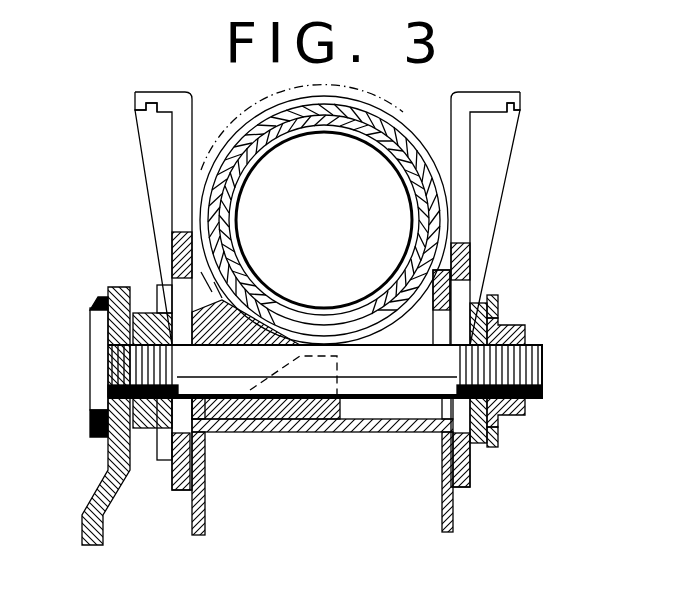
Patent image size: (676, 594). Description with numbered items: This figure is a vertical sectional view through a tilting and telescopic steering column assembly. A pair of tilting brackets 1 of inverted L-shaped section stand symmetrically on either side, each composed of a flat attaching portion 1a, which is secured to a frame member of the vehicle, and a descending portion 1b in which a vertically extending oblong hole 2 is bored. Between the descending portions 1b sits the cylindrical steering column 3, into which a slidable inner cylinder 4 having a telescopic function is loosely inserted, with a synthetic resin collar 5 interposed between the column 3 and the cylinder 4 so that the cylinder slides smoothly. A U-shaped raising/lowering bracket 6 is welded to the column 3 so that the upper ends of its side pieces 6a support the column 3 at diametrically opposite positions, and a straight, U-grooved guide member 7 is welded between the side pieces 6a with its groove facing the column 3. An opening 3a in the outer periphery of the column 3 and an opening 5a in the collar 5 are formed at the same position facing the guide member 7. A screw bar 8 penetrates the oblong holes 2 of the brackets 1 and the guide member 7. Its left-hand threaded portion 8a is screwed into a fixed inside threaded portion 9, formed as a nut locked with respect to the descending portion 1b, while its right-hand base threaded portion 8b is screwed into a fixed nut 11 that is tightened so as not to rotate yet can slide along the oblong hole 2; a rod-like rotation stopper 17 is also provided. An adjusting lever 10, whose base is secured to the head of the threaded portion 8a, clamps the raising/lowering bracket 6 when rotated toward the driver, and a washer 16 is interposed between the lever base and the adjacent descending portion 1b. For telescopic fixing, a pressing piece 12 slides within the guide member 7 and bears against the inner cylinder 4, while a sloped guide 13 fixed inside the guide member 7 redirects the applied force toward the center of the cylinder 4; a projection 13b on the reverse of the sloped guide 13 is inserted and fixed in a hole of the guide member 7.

The tilting bracket 1 is at (170, 165).
The flat attaching portion 1a is at (165, 112).
The descending portion 1b is at (170, 215).
The oblong hole 2 is at (458, 323).
The steering column 3 is at (358, 98).
The opening 3a is at (245, 278).
The slidable inner cylinder 4 is at (413, 213).
The collar 5 is at (338, 117).
The opening 5a is at (250, 292).
The raising/lowering bracket 6 is at (205, 496).
The side piece 6a is at (207, 447).
The guide member 7 is at (330, 432).
The screw bar 8 is at (541, 347).
The threaded portion 8a is at (542, 375).
The base threaded portion 8b is at (110, 368).
The fixed inside threaded portion 9 is at (522, 407).
The adjusting lever 10 is at (94, 502).
The fixed nut 11 is at (147, 312).
The pressing piece 12 is at (267, 303).
The sloped guide 13 is at (320, 352).
The projection 13b is at (237, 433).
The washer 16 is at (490, 440).
The rotation stopper 17 is at (166, 462).